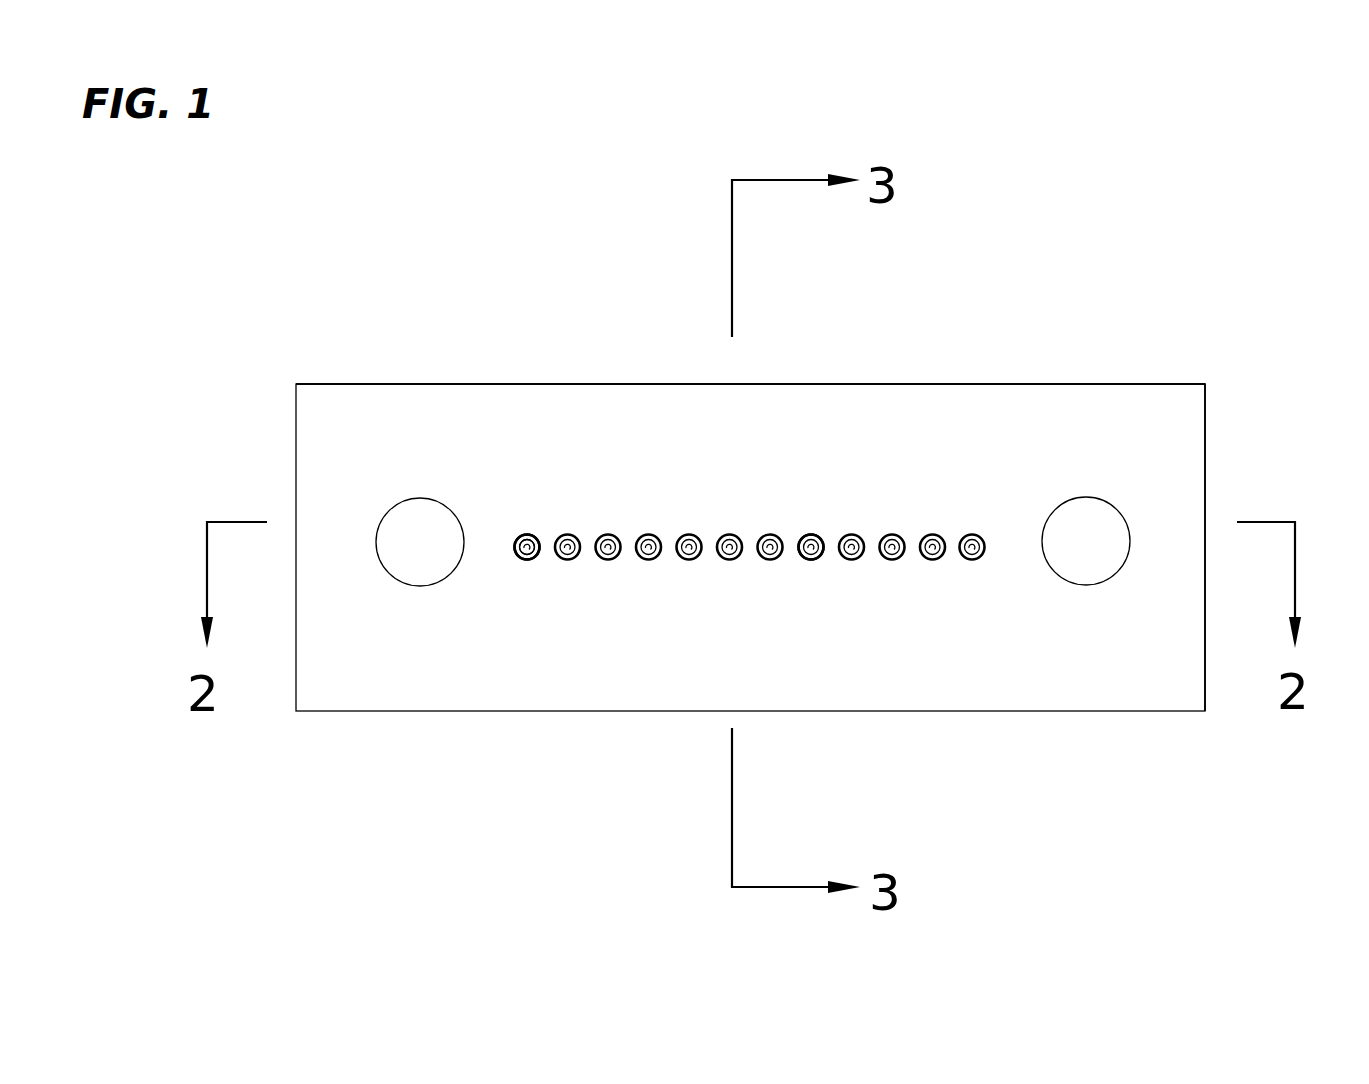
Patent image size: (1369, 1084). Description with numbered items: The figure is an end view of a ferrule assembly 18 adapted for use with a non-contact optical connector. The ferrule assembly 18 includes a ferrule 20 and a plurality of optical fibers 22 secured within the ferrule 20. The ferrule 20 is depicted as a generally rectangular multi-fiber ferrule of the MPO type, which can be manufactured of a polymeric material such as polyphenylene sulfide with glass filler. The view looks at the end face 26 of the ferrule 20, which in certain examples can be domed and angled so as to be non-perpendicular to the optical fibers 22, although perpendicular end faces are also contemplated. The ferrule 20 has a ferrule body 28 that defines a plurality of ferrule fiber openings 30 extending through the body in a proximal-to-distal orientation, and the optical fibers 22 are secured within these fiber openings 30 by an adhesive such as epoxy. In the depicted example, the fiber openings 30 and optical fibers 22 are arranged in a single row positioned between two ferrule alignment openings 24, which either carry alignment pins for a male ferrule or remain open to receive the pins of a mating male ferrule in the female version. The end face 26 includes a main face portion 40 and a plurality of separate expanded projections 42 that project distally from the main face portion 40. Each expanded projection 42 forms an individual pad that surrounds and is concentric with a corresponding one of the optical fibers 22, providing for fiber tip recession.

The ferrule assembly 18 is at (1198, 268).
The ferrule 20 is at (365, 384).
The optical fibers 22 is at (524, 538).
The ferrule alignment openings 24 is at (395, 577).
The end face 26 is at (821, 405).
The ferrule body 28 is at (1205, 422).
The ferrule fiber openings 30 is at (530, 560).
The main face portion 40 is at (428, 432).
The expanded projections 42 is at (532, 538).